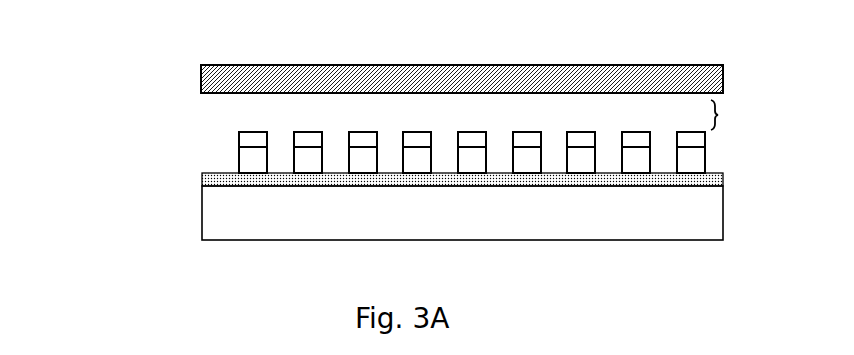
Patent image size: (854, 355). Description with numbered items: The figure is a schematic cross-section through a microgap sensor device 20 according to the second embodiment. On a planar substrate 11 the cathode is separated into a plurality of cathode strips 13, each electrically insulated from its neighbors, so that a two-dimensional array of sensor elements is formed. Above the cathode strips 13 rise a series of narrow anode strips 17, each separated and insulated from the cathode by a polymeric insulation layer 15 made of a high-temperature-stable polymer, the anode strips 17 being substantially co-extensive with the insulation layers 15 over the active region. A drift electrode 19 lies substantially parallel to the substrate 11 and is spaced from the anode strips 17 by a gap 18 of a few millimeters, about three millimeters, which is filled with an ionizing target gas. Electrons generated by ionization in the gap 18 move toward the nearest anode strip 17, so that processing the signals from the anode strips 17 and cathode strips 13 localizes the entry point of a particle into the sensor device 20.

The substrate 11 is at (363, 227).
The cathode strips 13 is at (323, 183).
The polymeric insulation layers 15 is at (254, 167).
The anode strips 17 is at (255, 138).
The gap 18 is at (719, 115).
The drift electrode 19 is at (419, 80).
The sensor device 20 is at (99, 124).